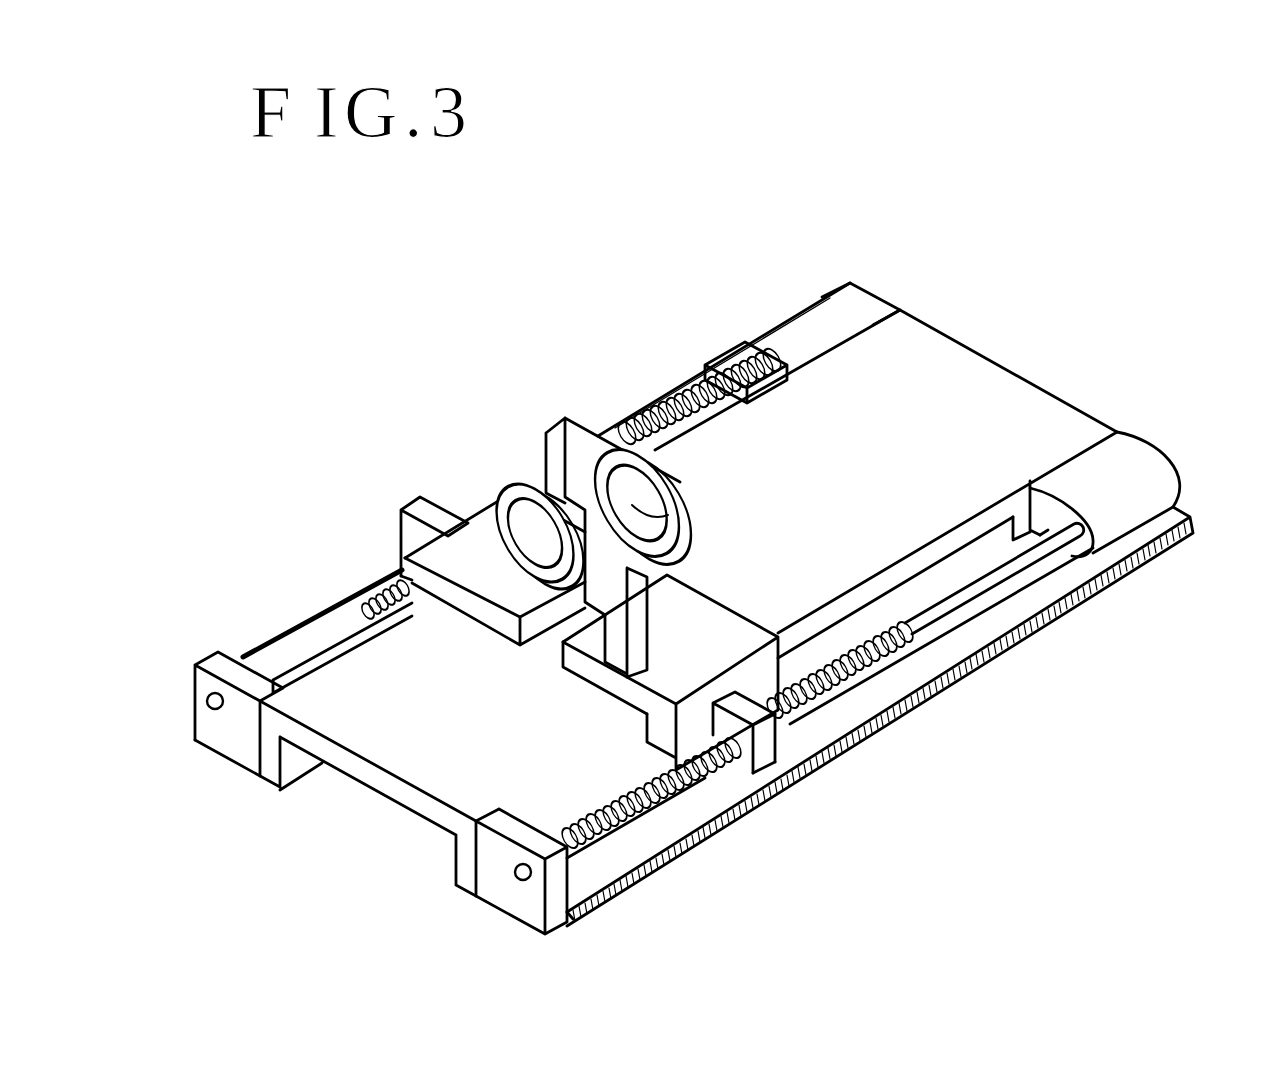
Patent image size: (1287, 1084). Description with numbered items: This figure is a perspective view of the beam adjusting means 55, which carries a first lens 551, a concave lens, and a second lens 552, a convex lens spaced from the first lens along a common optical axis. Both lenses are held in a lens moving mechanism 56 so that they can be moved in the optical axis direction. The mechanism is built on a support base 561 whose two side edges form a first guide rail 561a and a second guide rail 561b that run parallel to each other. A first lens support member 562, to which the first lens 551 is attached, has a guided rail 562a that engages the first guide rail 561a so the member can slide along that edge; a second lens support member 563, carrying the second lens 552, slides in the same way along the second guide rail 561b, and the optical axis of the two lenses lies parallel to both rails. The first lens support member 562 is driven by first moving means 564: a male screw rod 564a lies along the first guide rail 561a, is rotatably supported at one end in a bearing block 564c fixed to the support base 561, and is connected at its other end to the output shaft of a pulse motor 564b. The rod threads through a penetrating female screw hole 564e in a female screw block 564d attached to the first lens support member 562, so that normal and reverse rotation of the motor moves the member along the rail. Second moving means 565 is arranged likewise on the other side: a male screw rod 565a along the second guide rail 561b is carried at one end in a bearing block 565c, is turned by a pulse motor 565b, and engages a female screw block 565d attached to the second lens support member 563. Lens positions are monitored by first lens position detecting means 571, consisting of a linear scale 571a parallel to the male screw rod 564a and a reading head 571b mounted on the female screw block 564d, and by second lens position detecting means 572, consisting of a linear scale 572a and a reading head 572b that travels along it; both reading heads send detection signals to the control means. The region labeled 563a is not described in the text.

The beam adjusting means 55 is at (605, 232).
The lens moving mechanism 56 is at (752, 268).
The first lens 551 is at (530, 548).
The second lens 552 is at (683, 503).
The support base 561 is at (358, 772).
The first guide rail 561a is at (1052, 612).
The second guide rail 561b is at (320, 683).
The first lens support member 562 is at (746, 599).
The guided rail 562a is at (640, 735).
The second lens support member 563 is at (473, 627).
The slide table plate 563a is at (430, 604).
The first moving means 564 is at (1119, 546).
The male screw rod 564a is at (913, 693).
The pulse motor 564b is at (1142, 459).
The bearing block 564c is at (566, 893).
The female screw block 564d is at (776, 742).
The female screw hole 564e is at (750, 750).
The second moving means 565 is at (668, 385).
The male screw rod 565a is at (742, 402).
The pulse motor 565b is at (848, 297).
The bearing block 565c is at (215, 660).
The female screw block 565d is at (427, 510).
The first lens position detecting means 571 is at (747, 815).
The linear scale 571a is at (887, 725).
The reading head 571b is at (770, 782).
The second lens position detecting means 572 is at (354, 533).
The linear scale 572a is at (337, 608).
The reading head 572b is at (403, 560).